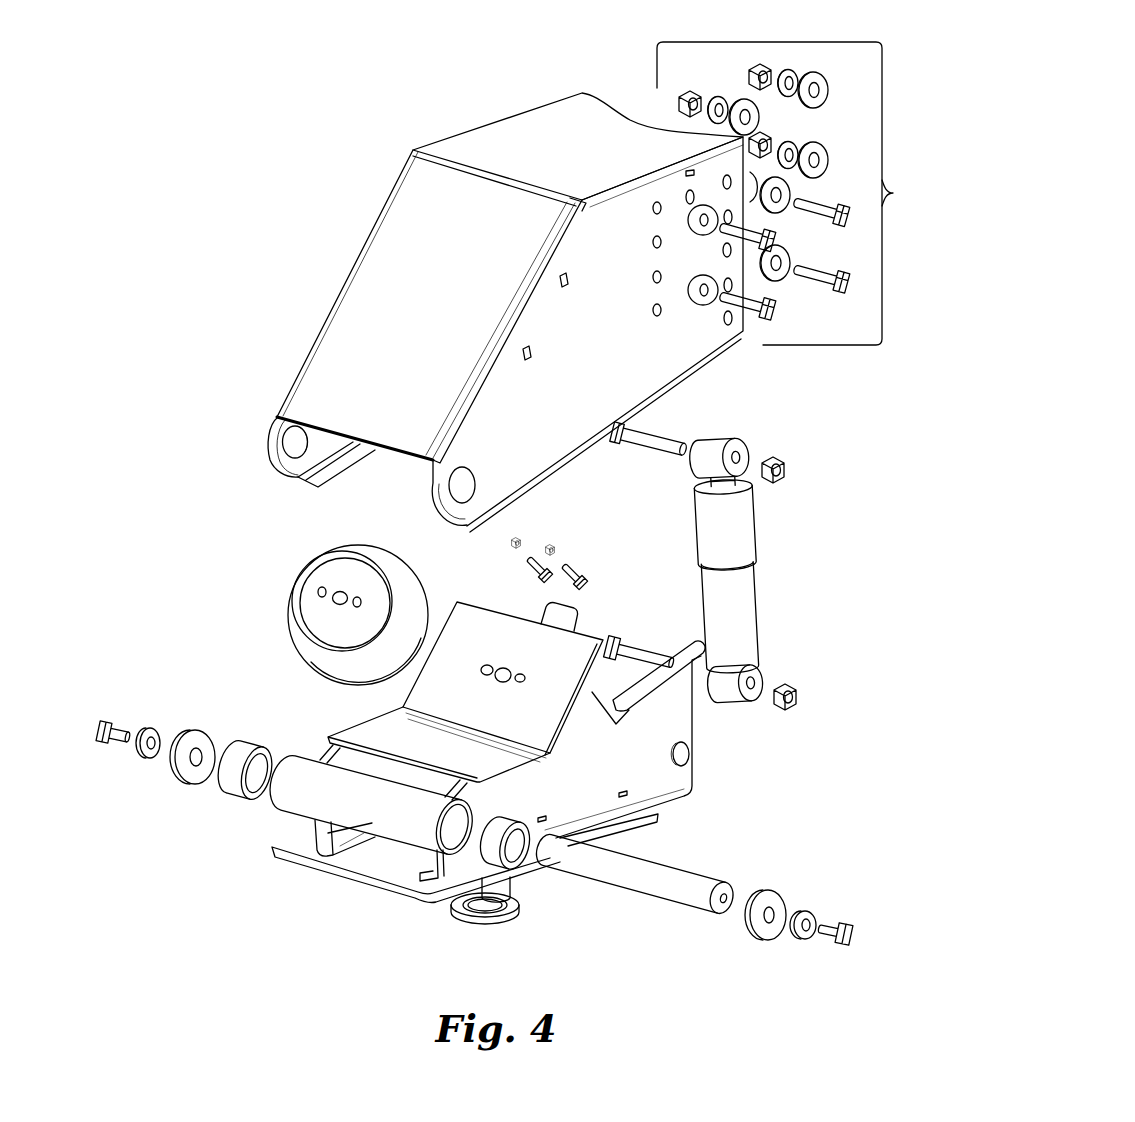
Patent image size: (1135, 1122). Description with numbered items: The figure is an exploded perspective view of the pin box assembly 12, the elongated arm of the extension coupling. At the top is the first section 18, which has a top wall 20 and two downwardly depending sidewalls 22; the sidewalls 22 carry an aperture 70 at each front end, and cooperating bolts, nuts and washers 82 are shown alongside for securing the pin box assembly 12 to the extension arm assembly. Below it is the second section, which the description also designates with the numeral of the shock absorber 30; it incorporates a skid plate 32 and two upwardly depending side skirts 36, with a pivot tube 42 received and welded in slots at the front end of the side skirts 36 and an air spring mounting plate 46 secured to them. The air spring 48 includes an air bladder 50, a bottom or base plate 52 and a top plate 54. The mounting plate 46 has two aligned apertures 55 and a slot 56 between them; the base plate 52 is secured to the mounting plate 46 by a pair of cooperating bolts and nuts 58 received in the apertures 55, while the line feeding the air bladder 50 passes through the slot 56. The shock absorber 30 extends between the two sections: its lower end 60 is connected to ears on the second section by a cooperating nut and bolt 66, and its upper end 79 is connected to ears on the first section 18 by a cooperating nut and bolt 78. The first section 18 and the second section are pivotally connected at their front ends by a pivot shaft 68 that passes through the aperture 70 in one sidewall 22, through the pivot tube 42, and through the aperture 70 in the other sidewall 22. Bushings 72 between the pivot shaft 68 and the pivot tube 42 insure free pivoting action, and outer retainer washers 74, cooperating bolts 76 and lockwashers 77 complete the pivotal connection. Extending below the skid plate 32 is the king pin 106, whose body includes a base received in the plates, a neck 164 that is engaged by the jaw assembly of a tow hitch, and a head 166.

The pin box assembly 12 is at (203, 178).
The first section 18 is at (459, 298).
The top wall 20 is at (483, 147).
The sidewalls 22 is at (690, 345).
The shock absorber 30 is at (785, 623).
The skid plate 32 is at (303, 865).
The side skirts 36 is at (318, 749).
The pivot tube 42 is at (298, 804).
The air spring mounting plate 46 is at (465, 668).
The air spring 48 is at (274, 602).
The air bladder 50 is at (302, 662).
The base plate 52 is at (430, 612).
The top plate 54 is at (316, 567).
The aligned apertures 55 is at (503, 682).
The slot 56 is at (498, 667).
The bolts and nuts 58 is at (568, 567).
The lower end 60 is at (729, 704).
The nut and bolt 66 is at (640, 648).
The pivot shaft 68 is at (625, 885).
The aperture 70 is at (290, 441).
The bushings 72 is at (223, 786).
The outer retainer washers 74 is at (173, 771).
The bolts 76 is at (100, 722).
The lockwashers 77 is at (140, 730).
The nut and bolt 78 is at (645, 440).
The upper end 79 is at (718, 444).
The bolts, nuts and washers 82 is at (789, 193).
The king pin 106 is at (411, 932).
The neck 164 is at (495, 900).
The head 166 is at (460, 918).